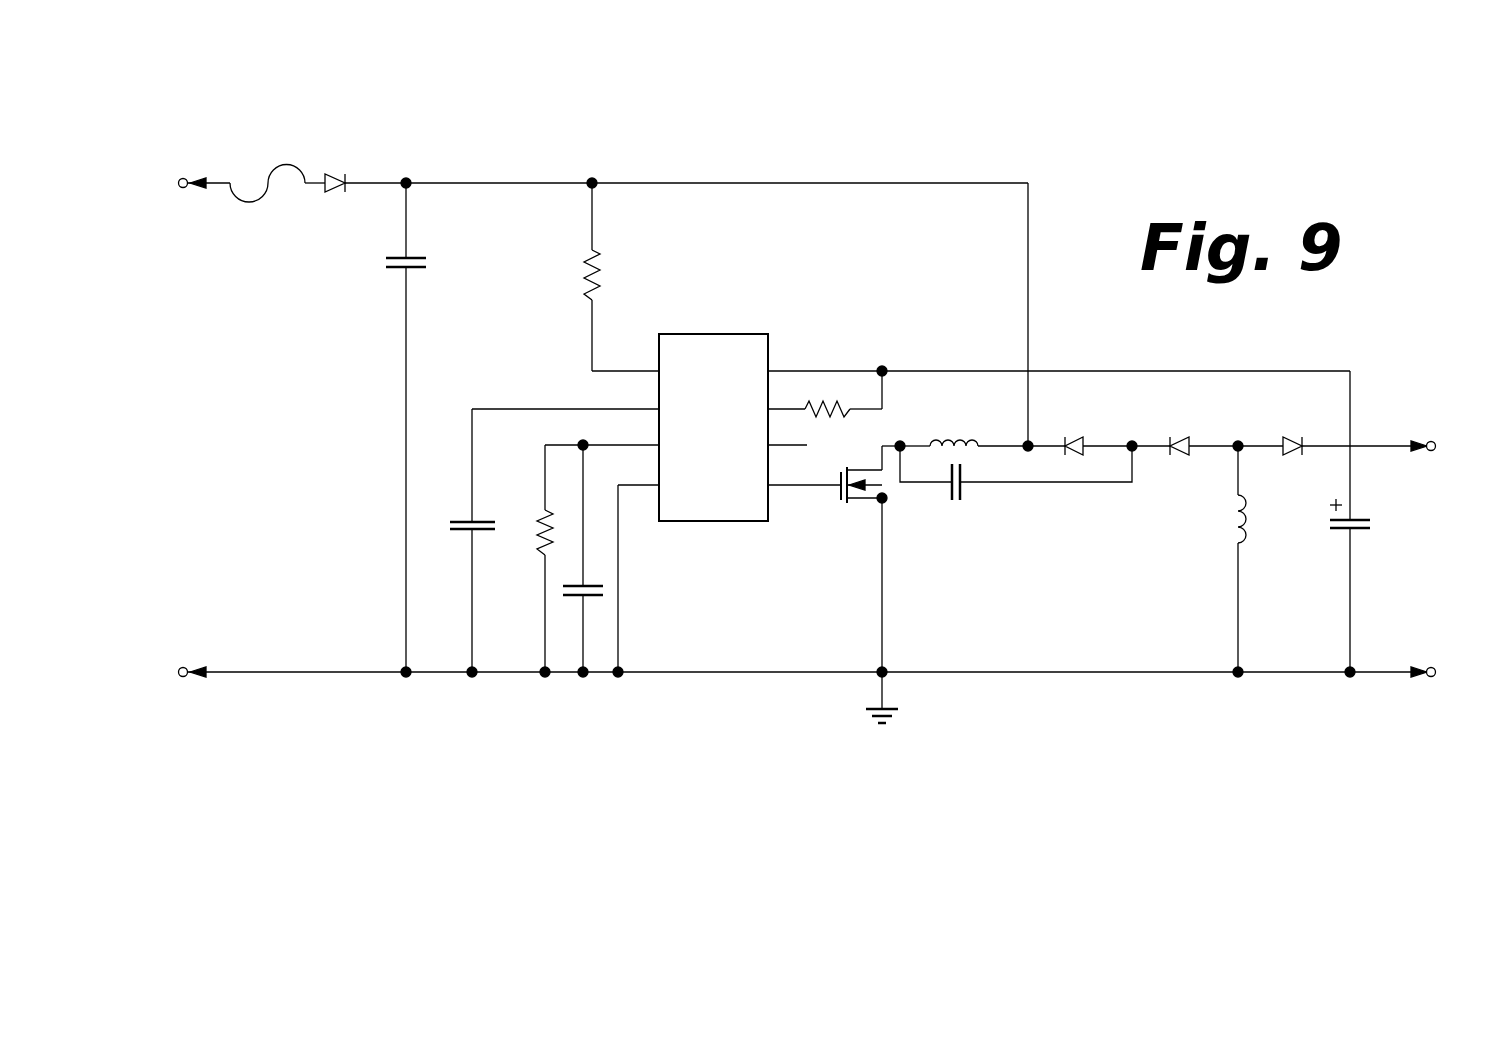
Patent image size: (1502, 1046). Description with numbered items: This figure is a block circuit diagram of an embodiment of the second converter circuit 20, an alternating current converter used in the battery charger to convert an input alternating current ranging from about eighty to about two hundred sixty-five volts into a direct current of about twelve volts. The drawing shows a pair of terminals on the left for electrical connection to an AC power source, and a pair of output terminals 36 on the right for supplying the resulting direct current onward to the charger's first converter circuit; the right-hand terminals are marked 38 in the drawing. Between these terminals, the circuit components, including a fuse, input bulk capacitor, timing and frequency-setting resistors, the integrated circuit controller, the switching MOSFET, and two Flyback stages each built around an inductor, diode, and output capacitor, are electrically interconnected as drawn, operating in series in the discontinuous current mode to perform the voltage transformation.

The second converter circuit 20 is at (787, 723).
The output terminals 36 is at (187, 180).
The DC output terminals 38 is at (1428, 442).